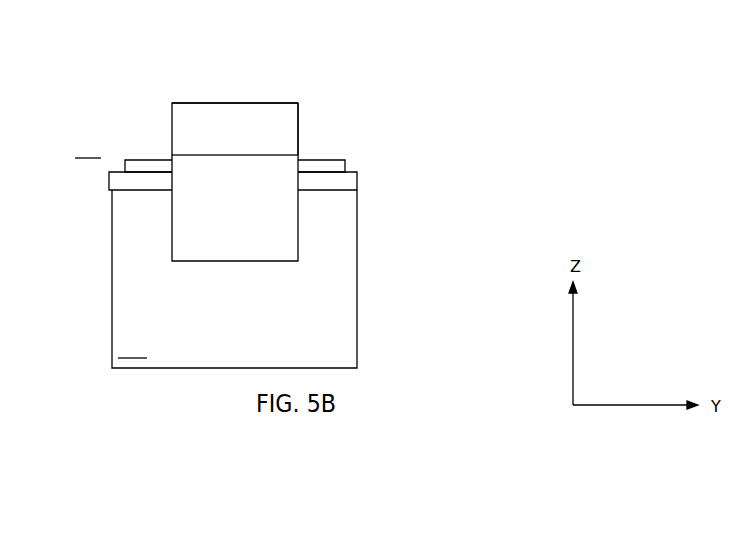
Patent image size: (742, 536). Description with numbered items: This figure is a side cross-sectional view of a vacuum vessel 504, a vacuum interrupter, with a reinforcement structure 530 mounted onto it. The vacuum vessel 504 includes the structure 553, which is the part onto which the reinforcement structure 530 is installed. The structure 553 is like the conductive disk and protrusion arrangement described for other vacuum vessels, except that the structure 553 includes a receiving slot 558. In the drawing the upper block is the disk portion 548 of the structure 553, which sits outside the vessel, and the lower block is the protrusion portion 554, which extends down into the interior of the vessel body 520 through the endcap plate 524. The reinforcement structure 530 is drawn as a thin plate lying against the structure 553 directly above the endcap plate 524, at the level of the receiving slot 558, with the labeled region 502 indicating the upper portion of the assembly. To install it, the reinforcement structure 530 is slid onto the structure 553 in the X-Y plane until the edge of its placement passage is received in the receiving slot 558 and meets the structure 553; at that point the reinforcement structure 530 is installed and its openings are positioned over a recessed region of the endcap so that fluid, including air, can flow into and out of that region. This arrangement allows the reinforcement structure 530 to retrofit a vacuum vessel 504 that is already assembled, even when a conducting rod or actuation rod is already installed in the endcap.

The first portion / die assembly 502 is at (88, 150).
The vacuum vessel 504 is at (132, 350).
The body 520 is at (357, 298).
The plate 524 is at (357, 180).
The reinforcement structure 530 is at (146, 160).
The upper block 548 is at (235, 129).
The structure 553 is at (200, 103).
The lower block 554 is at (235, 208).
The receiving slot 558 is at (299, 153).